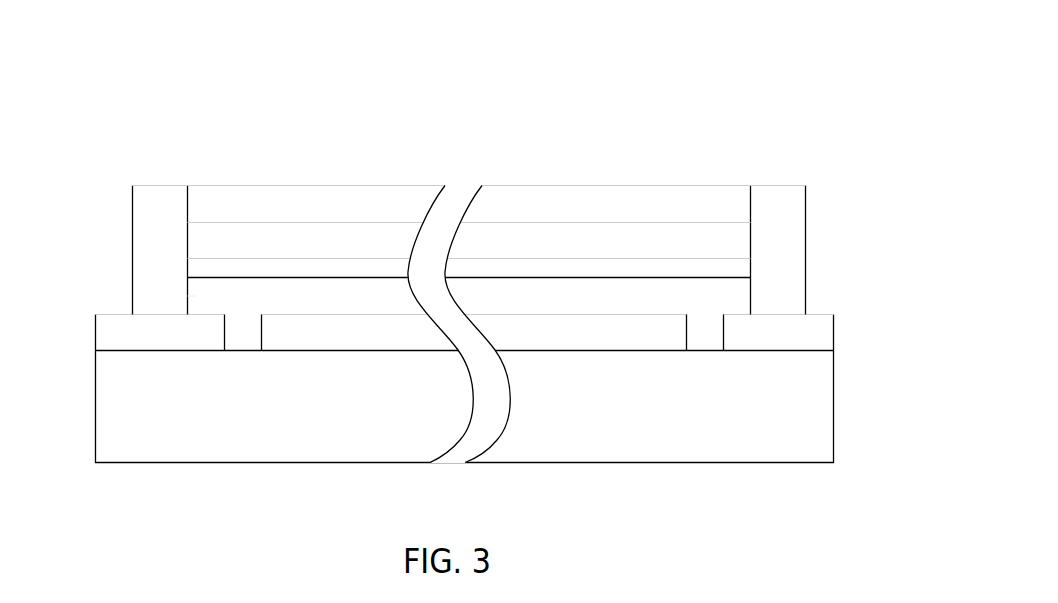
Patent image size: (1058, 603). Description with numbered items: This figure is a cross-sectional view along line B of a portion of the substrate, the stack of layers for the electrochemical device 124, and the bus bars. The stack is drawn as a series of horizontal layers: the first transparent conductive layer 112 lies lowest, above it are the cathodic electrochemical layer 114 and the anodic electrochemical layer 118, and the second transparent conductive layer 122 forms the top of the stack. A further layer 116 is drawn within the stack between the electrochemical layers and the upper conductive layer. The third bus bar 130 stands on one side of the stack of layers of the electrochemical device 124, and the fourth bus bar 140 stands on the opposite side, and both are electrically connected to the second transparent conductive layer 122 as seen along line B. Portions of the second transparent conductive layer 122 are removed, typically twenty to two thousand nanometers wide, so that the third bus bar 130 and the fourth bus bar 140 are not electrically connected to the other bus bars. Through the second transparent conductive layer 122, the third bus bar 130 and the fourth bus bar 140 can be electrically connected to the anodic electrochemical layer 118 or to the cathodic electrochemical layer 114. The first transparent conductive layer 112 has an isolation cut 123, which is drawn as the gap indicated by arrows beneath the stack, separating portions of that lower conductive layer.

The electrochemical device 124 is at (193, 66).
The third bus bar 130 is at (152, 202).
The second transparent conductive layer 122 is at (335, 203).
The fourth bus bar 140 is at (767, 220).
The anodic electrochemical layer 118 is at (197, 242).
The lower layer 116 is at (713, 267).
The cathodic electrochemical layer 114 is at (197, 298).
The first transparent conductive layer 112 is at (795, 342).
The isolation cut 123 is at (242, 358).